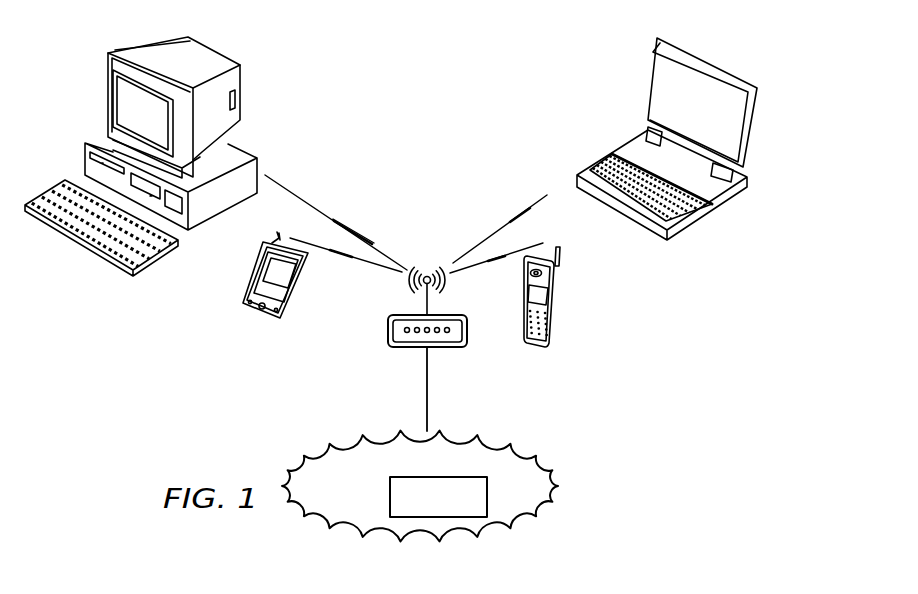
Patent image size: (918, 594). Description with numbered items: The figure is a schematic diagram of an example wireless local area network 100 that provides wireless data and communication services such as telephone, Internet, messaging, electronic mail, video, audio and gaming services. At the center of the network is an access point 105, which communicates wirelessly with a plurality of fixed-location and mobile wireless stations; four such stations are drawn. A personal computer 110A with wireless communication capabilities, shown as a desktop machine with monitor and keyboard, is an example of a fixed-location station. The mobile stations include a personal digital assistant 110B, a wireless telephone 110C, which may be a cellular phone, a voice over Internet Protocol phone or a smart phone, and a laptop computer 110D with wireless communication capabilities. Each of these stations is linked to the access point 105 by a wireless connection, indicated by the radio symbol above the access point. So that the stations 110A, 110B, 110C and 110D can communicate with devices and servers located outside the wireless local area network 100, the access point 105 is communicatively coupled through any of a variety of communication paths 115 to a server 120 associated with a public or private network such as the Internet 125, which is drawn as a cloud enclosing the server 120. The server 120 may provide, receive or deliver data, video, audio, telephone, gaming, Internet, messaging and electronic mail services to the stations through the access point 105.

The wireless local area network 100 is at (248, 385).
The access point 105 is at (388, 329).
The personal computer 110A is at (147, 52).
The personal digital assistant 110B is at (258, 308).
The wireless telephone 110C is at (557, 345).
The laptop computer 110D is at (710, 60).
The communication paths 115 is at (428, 375).
The server 120 is at (390, 493).
The Internet 125 is at (558, 490).